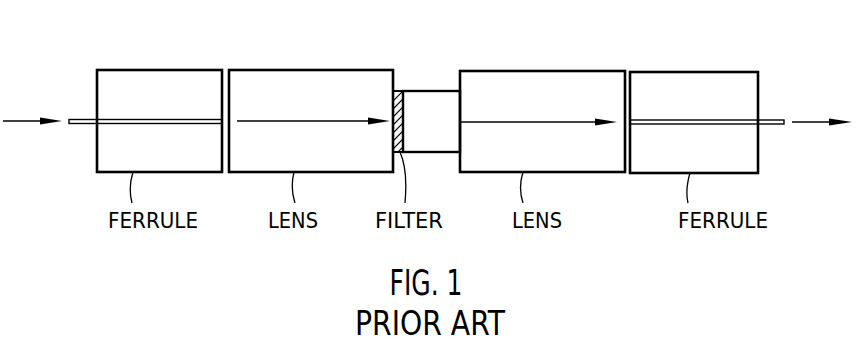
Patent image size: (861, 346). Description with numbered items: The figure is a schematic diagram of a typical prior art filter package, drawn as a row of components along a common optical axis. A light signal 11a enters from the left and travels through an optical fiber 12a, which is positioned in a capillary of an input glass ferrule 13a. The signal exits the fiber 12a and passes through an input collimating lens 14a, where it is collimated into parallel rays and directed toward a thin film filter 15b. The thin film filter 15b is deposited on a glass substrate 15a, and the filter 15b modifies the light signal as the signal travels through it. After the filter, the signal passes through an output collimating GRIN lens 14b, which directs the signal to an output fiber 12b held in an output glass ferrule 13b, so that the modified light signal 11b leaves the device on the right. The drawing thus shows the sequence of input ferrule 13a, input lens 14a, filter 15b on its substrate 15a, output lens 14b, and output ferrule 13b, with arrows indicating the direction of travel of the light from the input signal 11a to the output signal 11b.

The light signal 11a is at (17, 125).
The light signal 11b is at (810, 125).
The optical fiber 12a is at (85, 117).
The output fiber 12b is at (773, 118).
The input glass ferrule 13a is at (140, 70).
The output glass ferrule 13b is at (693, 72).
The input collimating lens 14a is at (287, 70).
The output collimating GRIN lens 14b is at (538, 71).
The glass substrate 15a is at (430, 91).
The thin film filter 15b is at (398, 91).